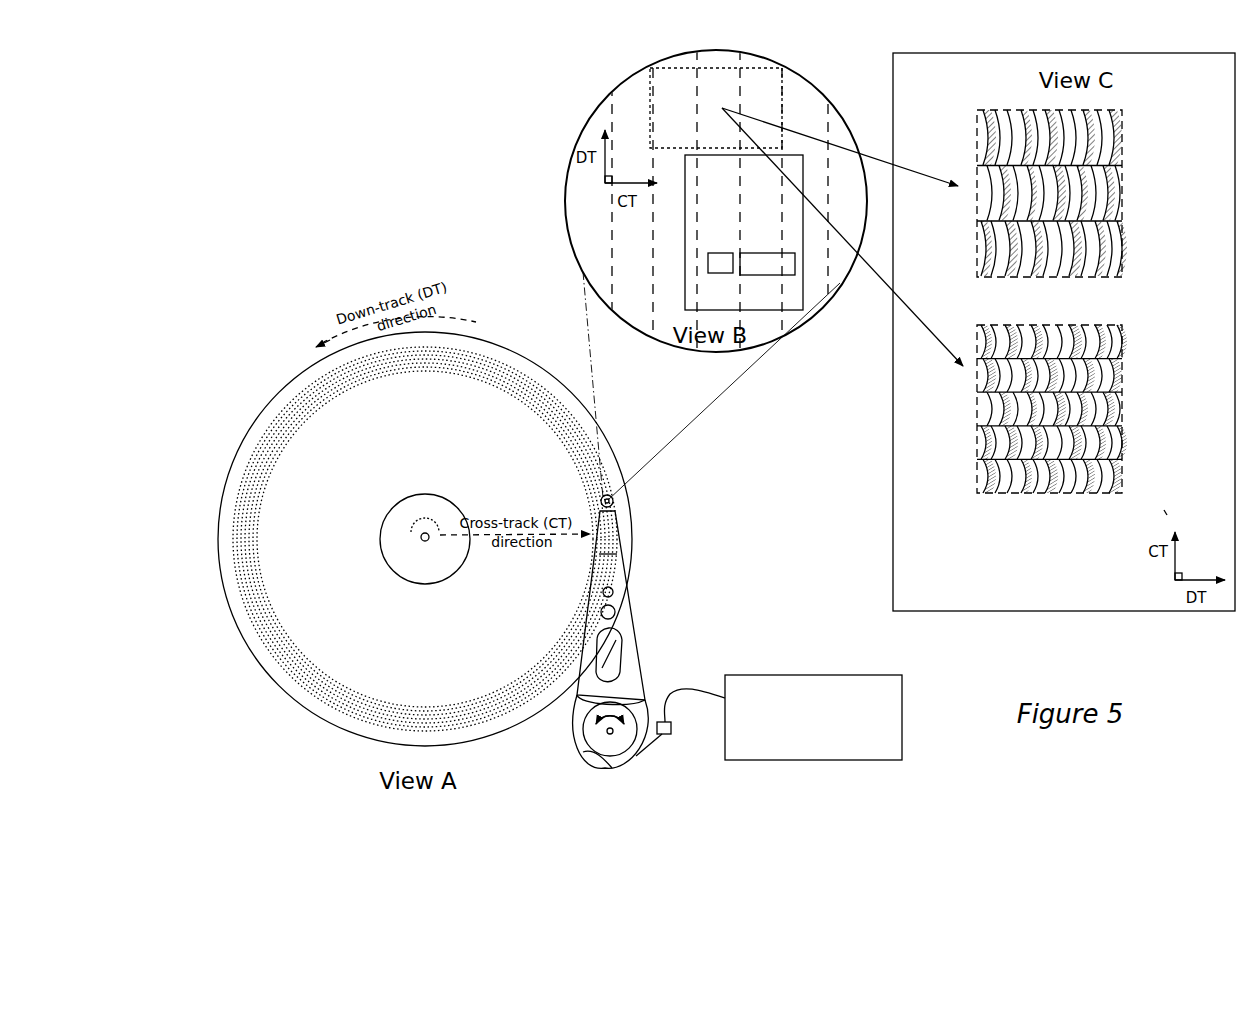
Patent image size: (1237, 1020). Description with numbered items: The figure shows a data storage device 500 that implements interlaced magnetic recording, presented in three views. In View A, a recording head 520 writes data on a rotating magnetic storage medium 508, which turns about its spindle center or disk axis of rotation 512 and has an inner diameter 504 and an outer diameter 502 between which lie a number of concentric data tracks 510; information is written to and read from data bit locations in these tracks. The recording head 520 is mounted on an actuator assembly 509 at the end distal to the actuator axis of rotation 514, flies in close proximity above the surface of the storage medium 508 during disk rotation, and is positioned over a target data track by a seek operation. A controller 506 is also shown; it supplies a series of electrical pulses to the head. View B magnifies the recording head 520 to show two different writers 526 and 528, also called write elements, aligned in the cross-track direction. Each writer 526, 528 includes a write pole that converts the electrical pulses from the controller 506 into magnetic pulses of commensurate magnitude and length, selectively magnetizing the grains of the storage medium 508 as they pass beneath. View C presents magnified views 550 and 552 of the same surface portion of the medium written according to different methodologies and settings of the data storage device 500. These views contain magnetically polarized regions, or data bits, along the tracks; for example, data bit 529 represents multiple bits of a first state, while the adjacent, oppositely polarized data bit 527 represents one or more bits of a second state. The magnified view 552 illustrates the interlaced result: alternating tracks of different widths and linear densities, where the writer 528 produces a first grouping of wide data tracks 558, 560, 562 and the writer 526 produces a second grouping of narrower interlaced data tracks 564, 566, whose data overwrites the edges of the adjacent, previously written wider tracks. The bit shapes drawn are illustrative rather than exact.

The data storage device 500 is at (334, 132).
The outer diameter 502 is at (281, 387).
The inner diameter 504 is at (381, 536).
The controller 506 is at (769, 717).
The magnetic storage medium 508 is at (300, 707).
The actuator assembly 509 is at (628, 622).
The data tracks 510 is at (277, 662).
The spindle / rotation center 512 is at (414, 527).
The actuator axis of rotation 514 is at (595, 735).
The recording head 520 is at (614, 503).
The writer 526 is at (712, 273).
The writer 528 is at (767, 264).
The data bit 527 is at (990, 124).
The data bit 529 is at (1000, 110).
The magnified view 550 is at (1015, 172).
The magnified view 552 is at (1092, 392).
The data track 558 is at (1128, 337).
The data track 560 is at (1128, 410).
The data track 562 is at (1128, 475).
The data track 564 is at (1128, 372).
The data track 566 is at (1128, 445).